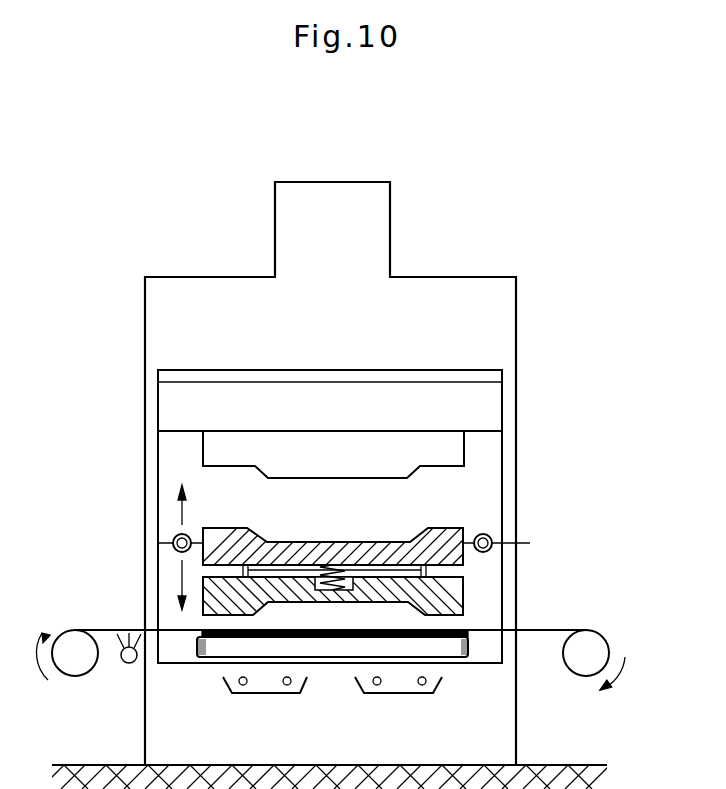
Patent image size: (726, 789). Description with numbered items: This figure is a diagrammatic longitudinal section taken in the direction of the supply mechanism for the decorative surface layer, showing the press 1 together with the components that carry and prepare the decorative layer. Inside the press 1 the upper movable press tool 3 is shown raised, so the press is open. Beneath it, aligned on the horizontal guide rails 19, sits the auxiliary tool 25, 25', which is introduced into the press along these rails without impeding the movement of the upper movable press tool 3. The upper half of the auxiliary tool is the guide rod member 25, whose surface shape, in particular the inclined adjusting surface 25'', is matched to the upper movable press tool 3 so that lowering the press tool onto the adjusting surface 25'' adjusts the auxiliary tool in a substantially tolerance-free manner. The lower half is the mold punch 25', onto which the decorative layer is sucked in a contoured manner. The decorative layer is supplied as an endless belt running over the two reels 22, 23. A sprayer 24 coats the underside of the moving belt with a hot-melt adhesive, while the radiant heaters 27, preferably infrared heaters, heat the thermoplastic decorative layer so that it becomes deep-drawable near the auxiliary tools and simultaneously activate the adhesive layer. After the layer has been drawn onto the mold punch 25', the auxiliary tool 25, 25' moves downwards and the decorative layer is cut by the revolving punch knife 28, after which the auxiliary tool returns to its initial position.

The press 1 is at (502, 307).
The upper movable press tool 3 is at (432, 445).
The horizontal guide rails 19 is at (173, 543).
The reel 22 is at (598, 648).
The reel 23 is at (73, 640).
The sprayer 24 is at (128, 663).
The guide rod member 25 is at (372, 549).
The adjusting surface 25'' is at (344, 535).
The mold punch 25' is at (372, 596).
The radiant heaters 27 is at (263, 693).
The revolving punch knife 28 is at (472, 647).